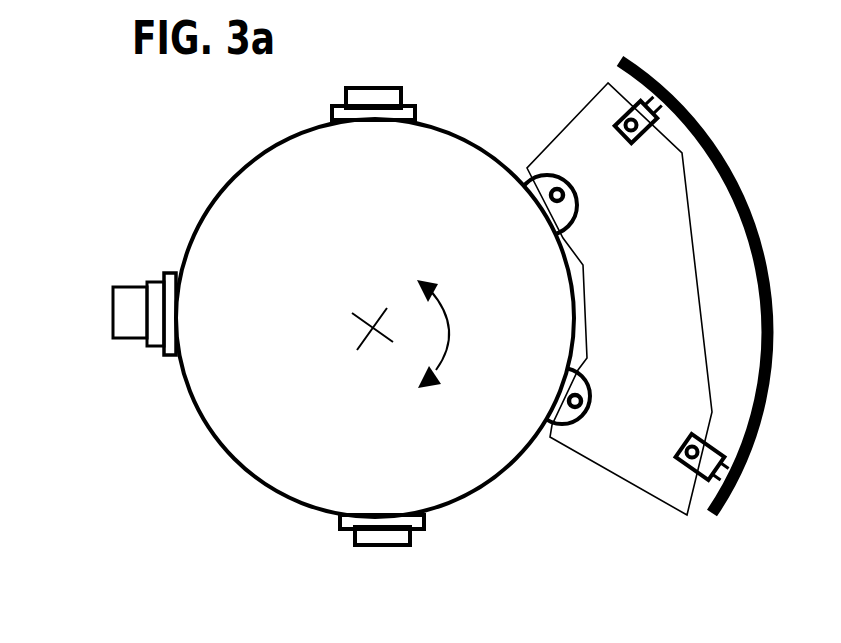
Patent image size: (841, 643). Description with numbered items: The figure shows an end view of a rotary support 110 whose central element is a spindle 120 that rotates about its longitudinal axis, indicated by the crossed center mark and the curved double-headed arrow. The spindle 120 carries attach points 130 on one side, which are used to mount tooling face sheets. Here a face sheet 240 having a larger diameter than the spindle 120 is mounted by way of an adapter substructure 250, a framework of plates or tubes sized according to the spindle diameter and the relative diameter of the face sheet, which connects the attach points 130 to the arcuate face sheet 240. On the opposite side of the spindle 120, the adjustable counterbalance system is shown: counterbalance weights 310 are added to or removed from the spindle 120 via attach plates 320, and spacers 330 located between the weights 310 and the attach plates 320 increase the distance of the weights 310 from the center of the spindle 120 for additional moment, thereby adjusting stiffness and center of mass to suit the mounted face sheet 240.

The rotary support 110 is at (213, 514).
The spindle 120 is at (243, 170).
The attach points 130 is at (542, 168).
The face sheet 240 is at (688, 112).
The adapter substructure 250 is at (593, 98).
The counterbalance weights 310 is at (112, 320).
The attach plates 320 is at (170, 362).
The spacers 330 is at (150, 282).